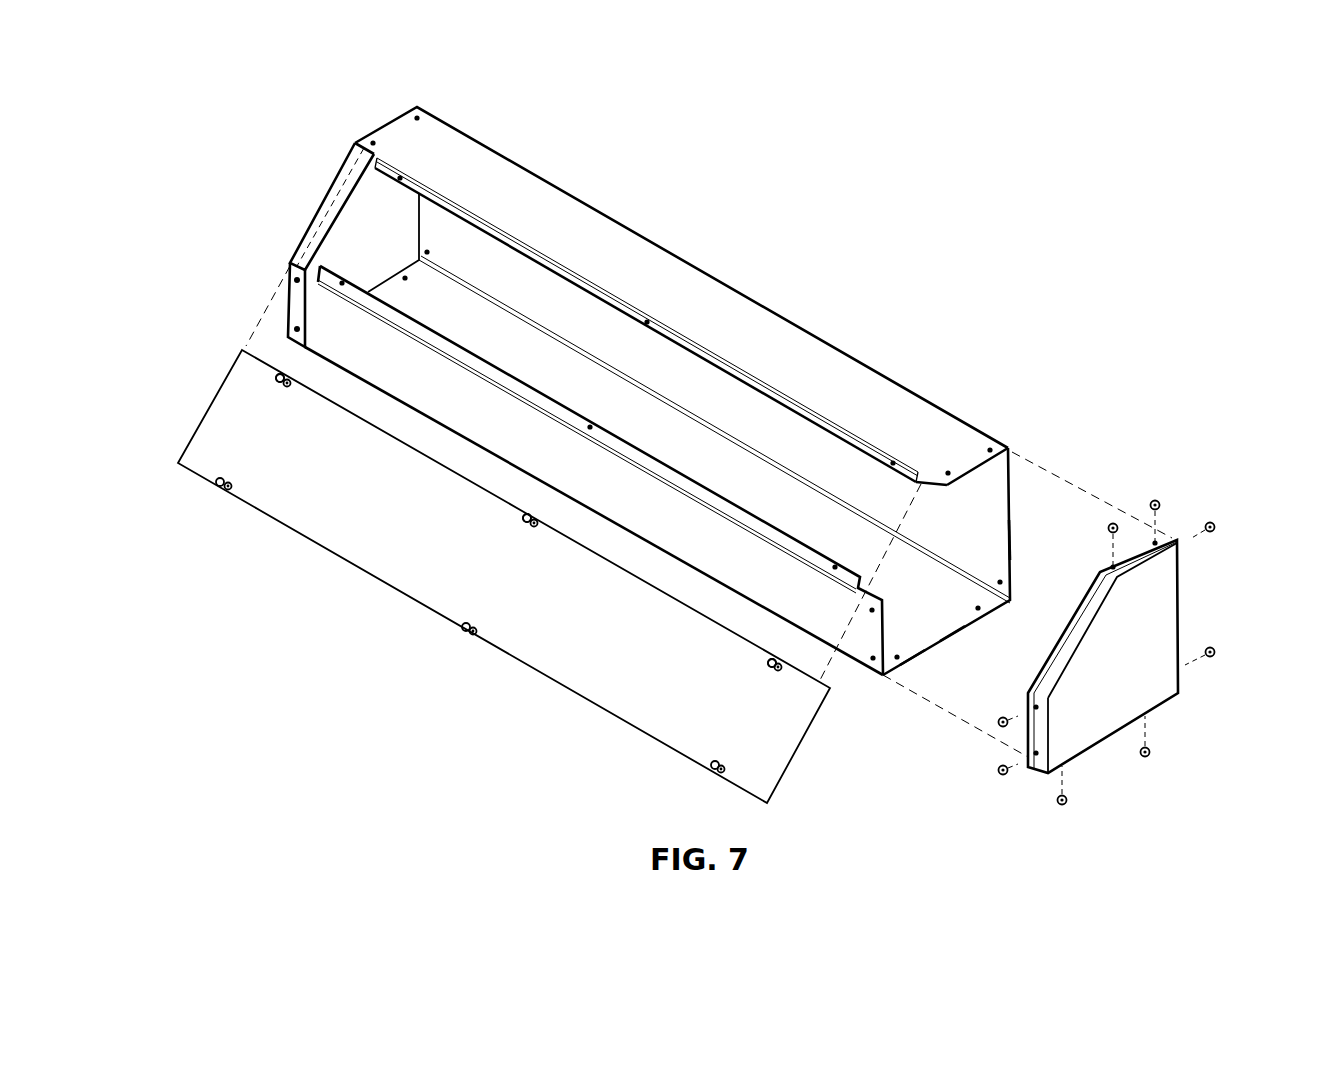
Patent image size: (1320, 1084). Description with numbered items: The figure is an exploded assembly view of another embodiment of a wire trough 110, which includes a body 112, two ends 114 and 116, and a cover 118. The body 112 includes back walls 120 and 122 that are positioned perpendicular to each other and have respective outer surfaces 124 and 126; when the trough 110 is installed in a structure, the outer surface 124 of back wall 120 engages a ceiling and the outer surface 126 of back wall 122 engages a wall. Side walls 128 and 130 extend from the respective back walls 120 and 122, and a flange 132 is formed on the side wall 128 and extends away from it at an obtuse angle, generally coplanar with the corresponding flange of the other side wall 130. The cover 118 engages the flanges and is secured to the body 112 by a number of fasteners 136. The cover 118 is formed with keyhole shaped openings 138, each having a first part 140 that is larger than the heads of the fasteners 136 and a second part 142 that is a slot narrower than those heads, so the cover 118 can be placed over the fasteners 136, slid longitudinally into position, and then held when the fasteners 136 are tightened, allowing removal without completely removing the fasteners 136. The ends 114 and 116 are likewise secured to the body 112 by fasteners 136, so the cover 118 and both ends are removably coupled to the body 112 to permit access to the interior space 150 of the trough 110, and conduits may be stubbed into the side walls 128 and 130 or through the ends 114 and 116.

The wire trough 110 is at (980, 194).
The body 112 is at (688, 461).
The end 114 is at (370, 228).
The end 116 is at (1138, 638).
The cover 118 is at (585, 657).
The back wall 120 is at (1013, 517).
The back wall 122 is at (927, 652).
The outer surface 124 is at (1012, 545).
The outer surface 126 is at (960, 633).
The side wall 128 is at (689, 296).
The side wall 130 is at (878, 668).
The flange 132 is at (780, 398).
The fasteners 136 is at (1115, 524).
The keyhole shaped openings 138 is at (456, 562).
The first part 140 is at (290, 378).
The second part 142 is at (296, 385).
The interior space 150 is at (690, 395).